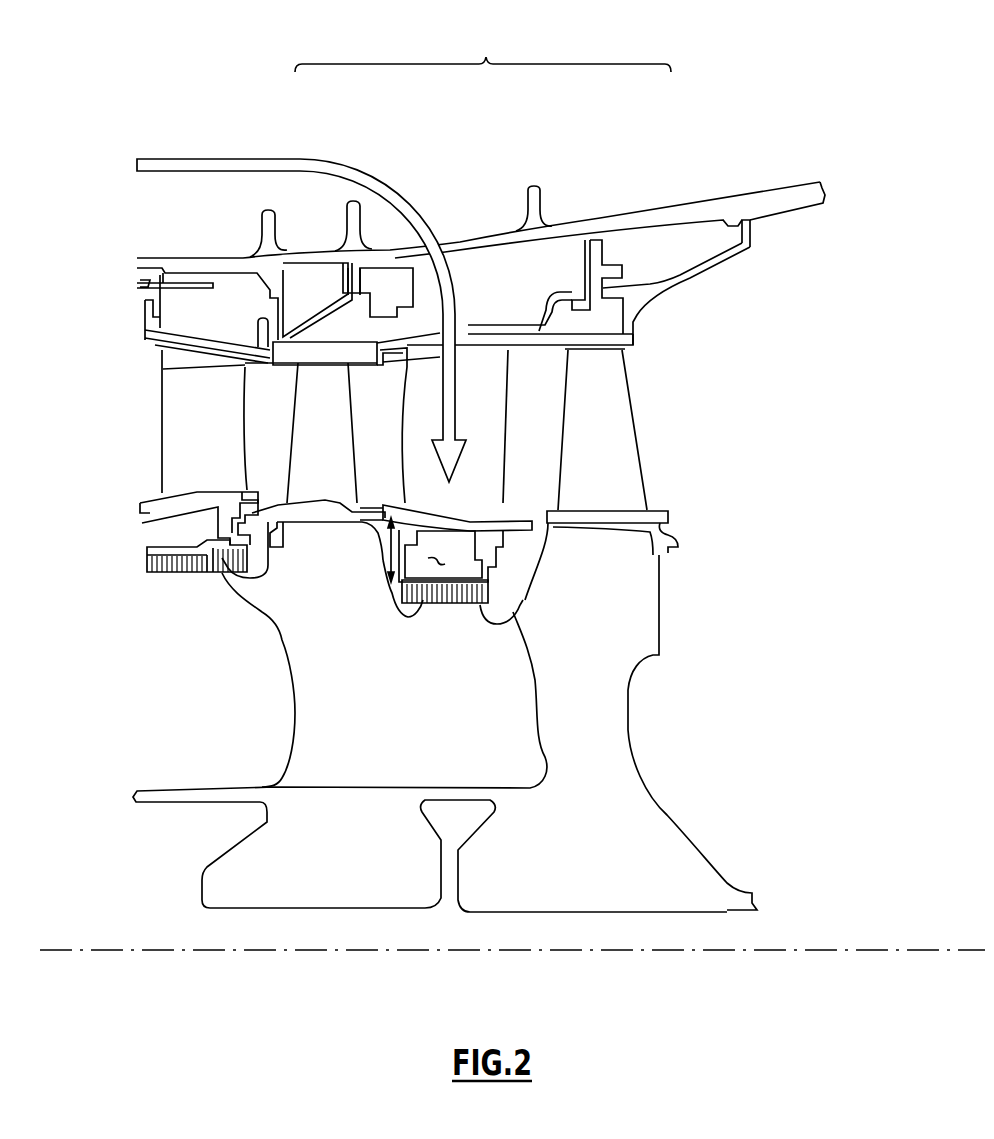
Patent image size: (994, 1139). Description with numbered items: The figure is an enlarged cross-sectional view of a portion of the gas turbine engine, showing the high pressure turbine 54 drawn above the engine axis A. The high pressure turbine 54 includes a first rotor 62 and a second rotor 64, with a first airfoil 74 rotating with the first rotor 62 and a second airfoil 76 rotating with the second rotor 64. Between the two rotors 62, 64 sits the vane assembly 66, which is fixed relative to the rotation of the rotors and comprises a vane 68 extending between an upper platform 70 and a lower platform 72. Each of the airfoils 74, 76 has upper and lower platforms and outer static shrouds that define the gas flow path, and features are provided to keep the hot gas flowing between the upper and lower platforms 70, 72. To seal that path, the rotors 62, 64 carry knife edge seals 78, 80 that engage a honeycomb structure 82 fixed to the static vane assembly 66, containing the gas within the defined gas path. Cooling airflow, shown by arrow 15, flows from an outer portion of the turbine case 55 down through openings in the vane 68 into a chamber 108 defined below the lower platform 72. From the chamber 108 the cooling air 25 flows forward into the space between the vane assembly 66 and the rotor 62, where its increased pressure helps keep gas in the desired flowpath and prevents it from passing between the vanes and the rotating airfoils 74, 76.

The high pressure turbine 54 is at (486, 57).
The cooling airflow arrow 15 is at (411, 206).
The turbine case 55 is at (474, 242).
The vane assembly 66 is at (521, 296).
The upper platform 70 is at (465, 348).
The vane 68 is at (478, 423).
The lower platform 72 is at (470, 520).
The chamber 108 is at (428, 560).
The cooling air 25 is at (389, 562).
The first blade or airfoil 74 is at (308, 462).
The second blade or airfoil 76 is at (618, 440).
The first rotor 62 is at (342, 714).
The second rotor 64 is at (640, 607).
The knife edge seal 78 is at (414, 622).
The knife edge seal 80 is at (486, 624).
The honeycomb structure 82 is at (447, 604).
The engine central axis A is at (838, 950).